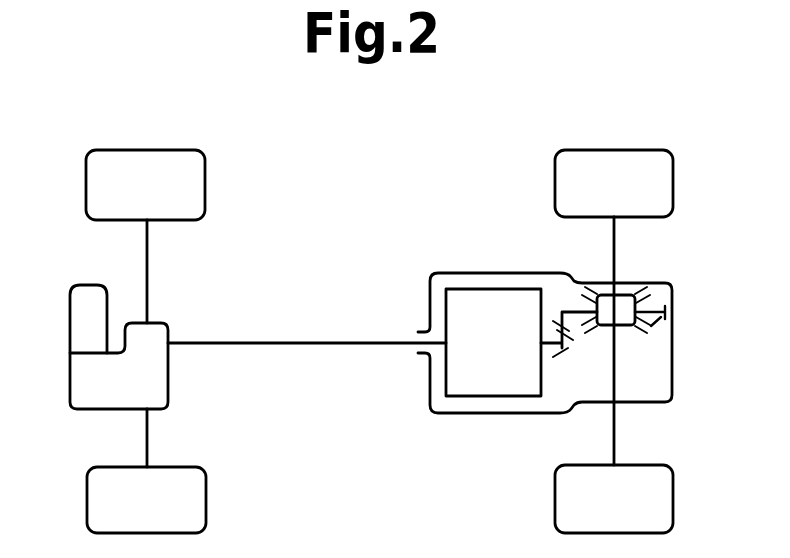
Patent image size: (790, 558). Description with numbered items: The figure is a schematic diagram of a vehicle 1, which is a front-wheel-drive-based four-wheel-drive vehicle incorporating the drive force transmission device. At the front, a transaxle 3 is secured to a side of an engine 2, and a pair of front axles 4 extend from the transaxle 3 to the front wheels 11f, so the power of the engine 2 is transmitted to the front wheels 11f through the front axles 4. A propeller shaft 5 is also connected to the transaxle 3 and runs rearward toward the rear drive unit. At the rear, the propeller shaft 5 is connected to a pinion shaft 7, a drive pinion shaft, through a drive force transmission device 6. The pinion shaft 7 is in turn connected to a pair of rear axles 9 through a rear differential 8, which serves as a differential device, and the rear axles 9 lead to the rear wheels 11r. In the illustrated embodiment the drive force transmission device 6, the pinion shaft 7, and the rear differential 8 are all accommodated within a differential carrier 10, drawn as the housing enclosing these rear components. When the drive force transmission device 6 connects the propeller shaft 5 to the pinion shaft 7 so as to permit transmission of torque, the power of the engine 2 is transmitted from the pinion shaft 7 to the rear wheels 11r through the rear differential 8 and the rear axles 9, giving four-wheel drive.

The vehicle 1 is at (427, 146).
The engine 2 is at (72, 327).
The transaxle 3 is at (72, 378).
The front axles 4 is at (147, 270).
The propeller shaft 5 is at (308, 343).
The drive force transmission device 6 is at (508, 289).
The pinion shaft 7 is at (549, 345).
The rear differential 8 is at (622, 327).
The rear axles 9 is at (614, 250).
The differential carrier 10 is at (447, 273).
The front wheels 11f is at (196, 184).
The rear wheels 11r is at (667, 180).